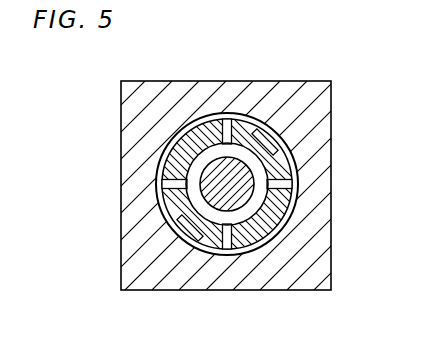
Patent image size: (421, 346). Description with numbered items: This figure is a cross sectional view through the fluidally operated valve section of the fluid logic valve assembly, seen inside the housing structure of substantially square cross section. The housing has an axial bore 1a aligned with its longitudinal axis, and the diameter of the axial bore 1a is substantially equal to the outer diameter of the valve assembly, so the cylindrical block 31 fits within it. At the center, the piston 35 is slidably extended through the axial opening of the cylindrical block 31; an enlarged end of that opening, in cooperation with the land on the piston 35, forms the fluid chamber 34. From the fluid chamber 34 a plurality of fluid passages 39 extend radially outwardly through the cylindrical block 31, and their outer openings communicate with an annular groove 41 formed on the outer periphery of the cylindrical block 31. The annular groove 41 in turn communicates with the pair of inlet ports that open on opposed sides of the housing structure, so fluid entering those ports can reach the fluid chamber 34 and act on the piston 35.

The annular groove 41 is at (282, 116).
The axial bore 1a is at (250, 255).
The fluid passages 39 is at (240, 115).
The cylindrical block 31 is at (274, 163).
The fluid chamber 34 is at (254, 200).
The piston 35 is at (241, 183).